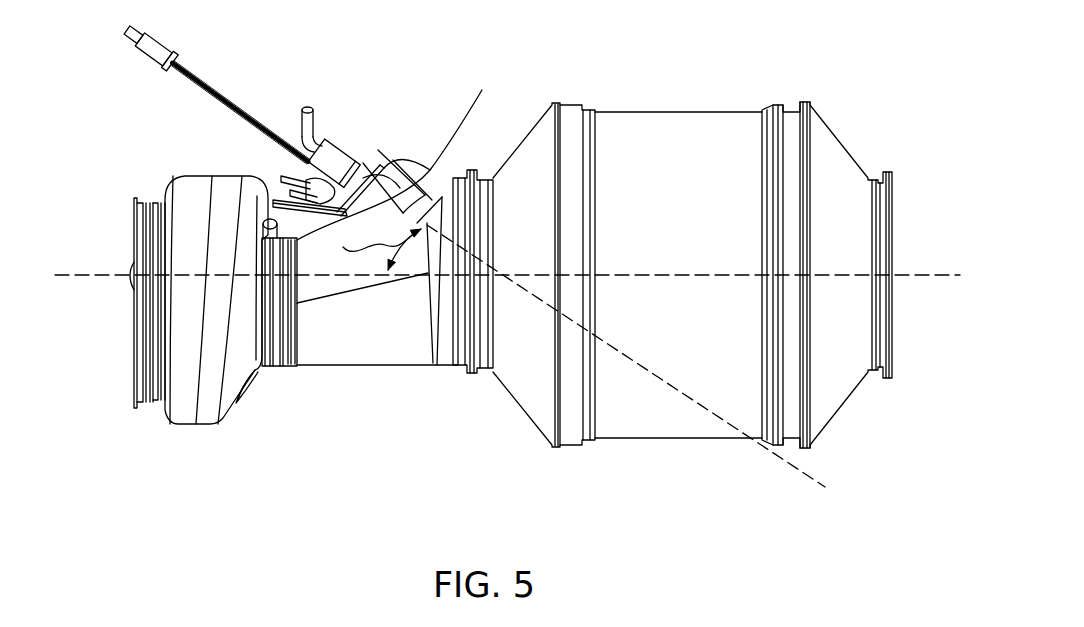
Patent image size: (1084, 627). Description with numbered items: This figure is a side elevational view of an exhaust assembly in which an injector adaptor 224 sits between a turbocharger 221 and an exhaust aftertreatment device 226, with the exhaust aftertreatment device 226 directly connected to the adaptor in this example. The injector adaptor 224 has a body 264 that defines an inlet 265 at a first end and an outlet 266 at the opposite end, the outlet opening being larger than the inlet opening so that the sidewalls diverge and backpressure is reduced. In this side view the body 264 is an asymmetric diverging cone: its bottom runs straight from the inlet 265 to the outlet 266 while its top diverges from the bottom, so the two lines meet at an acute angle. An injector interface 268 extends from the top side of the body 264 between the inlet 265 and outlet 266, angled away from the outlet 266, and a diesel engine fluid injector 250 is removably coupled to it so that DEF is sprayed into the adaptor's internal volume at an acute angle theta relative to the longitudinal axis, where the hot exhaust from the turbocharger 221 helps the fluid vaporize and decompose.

The turbocharger 221 is at (190, 382).
The injector adaptor 224 is at (370, 323).
The exhaust aftertreatment device 226 is at (647, 415).
The diesel engine fluid (DEF) injector 250 is at (332, 116).
The body 264 is at (400, 373).
The inlet 265 is at (268, 378).
The outlet 266 is at (468, 372).
The injector interface 268 is at (430, 168).